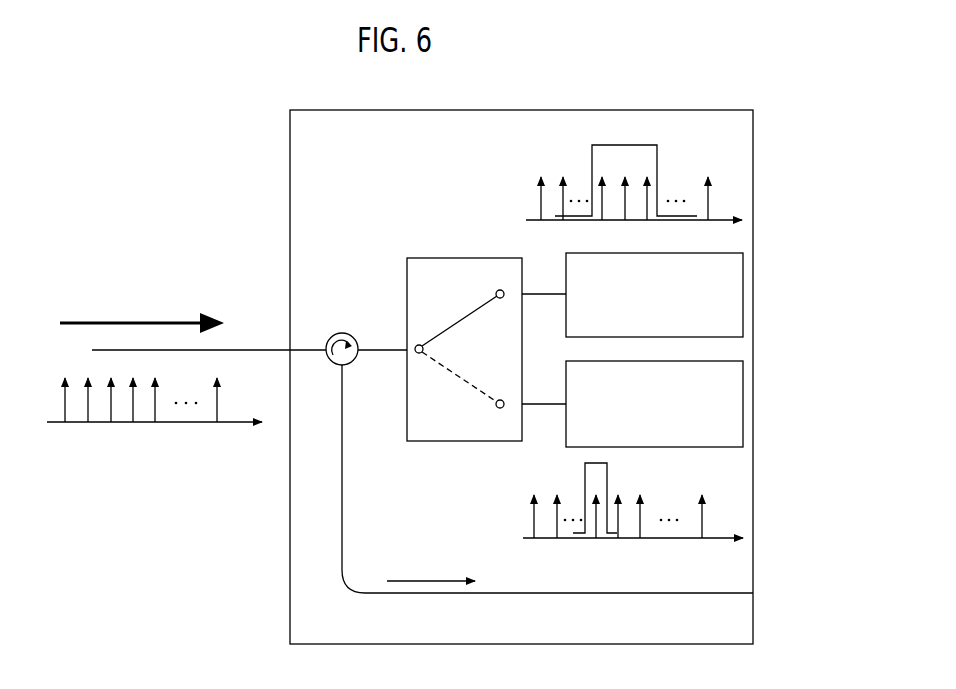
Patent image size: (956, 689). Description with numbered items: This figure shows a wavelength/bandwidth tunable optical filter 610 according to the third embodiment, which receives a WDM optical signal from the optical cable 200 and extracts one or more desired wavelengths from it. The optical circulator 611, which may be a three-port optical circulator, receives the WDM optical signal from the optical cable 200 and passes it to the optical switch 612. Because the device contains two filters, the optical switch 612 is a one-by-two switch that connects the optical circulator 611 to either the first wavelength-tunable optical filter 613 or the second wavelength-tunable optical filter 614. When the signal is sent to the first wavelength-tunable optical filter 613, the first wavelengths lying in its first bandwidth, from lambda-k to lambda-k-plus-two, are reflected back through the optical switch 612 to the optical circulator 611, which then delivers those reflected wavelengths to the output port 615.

The optical cable 200 is at (247, 350).
The wavelength/bandwidth tunable optical filter 610 is at (674, 110).
The optical circulator 611 is at (341, 333).
The optical switch 612 is at (465, 441).
The first wavelength-tunable optical filter 613 is at (743, 313).
The second wavelength-tunable optical filter 614 is at (743, 378).
The output port 615 is at (703, 594).